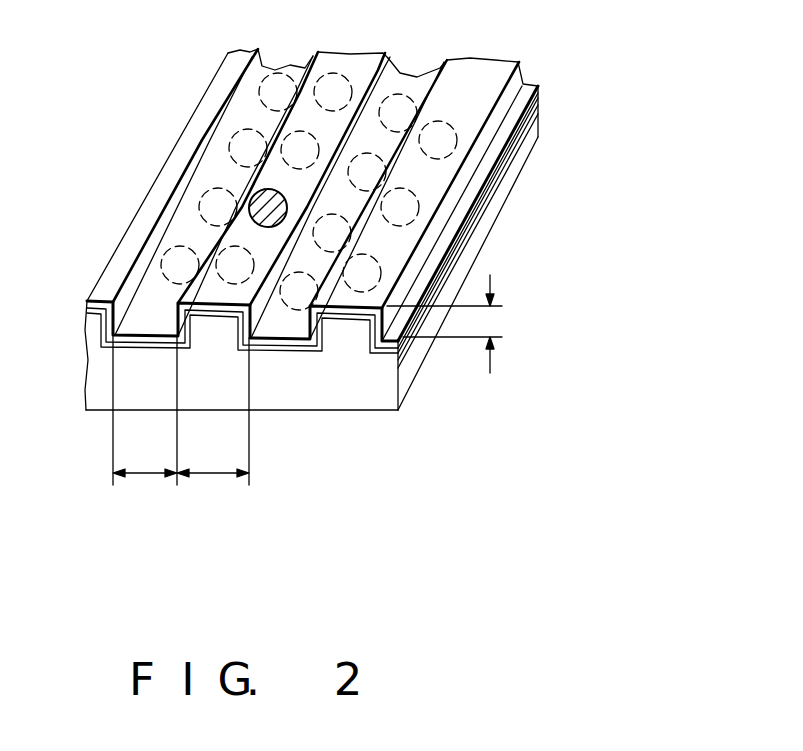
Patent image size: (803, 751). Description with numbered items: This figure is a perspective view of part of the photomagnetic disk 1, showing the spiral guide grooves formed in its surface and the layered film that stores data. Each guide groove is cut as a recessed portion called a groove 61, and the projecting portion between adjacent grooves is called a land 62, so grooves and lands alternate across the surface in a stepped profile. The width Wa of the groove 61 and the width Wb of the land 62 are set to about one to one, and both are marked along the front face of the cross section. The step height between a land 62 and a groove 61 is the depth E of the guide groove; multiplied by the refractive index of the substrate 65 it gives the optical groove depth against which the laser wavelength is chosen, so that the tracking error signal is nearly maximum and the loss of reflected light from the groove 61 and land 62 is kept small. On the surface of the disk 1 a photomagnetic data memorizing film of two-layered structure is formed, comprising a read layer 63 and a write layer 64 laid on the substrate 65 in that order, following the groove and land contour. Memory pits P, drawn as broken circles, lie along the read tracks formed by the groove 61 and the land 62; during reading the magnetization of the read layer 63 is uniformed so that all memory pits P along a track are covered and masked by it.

The photomagnetic disk 1 is at (369, 400).
The groove 61 is at (160, 323).
The land 62 is at (225, 297).
The read layer 63 is at (87, 315).
The write layer 64 is at (87, 302).
The substrate 65 is at (88, 377).
The memory pits P is at (337, 72).
The groove depth E is at (444, 324).
The width of the groove Wa is at (145, 490).
The width of the land Wb is at (213, 490).